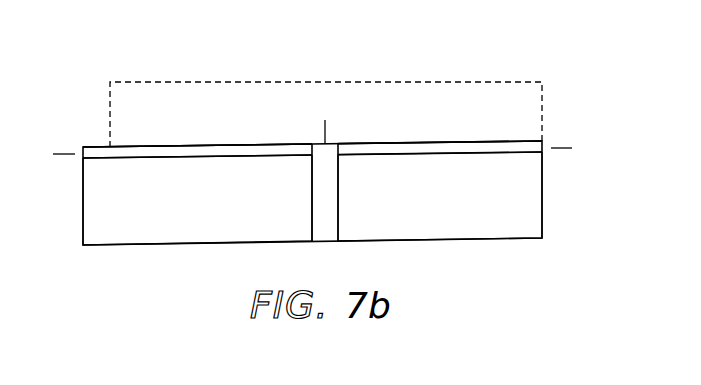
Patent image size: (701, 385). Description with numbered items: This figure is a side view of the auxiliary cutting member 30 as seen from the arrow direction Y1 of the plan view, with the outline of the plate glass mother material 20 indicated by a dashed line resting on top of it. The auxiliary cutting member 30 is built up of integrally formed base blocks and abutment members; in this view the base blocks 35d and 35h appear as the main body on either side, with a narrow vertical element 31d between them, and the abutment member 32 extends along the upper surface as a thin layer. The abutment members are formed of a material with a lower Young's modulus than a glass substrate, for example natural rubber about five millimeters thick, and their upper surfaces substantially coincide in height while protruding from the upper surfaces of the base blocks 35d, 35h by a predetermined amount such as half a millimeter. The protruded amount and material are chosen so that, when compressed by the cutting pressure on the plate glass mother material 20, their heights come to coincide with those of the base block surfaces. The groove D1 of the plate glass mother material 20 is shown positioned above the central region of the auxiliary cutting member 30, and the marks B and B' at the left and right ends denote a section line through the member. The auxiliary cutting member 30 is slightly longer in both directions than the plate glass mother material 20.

The auxiliary cutting member 30 is at (140, 65).
The slot / channel 31d is at (327, 230).
The abutment member 32 is at (243, 144).
The plate glass mother material 20 is at (462, 82).
The groove D1 is at (328, 130).
The base block 35d is at (208, 236).
The base block 35h is at (472, 235).
The section line B is at (53, 155).
The section line B' is at (575, 149).